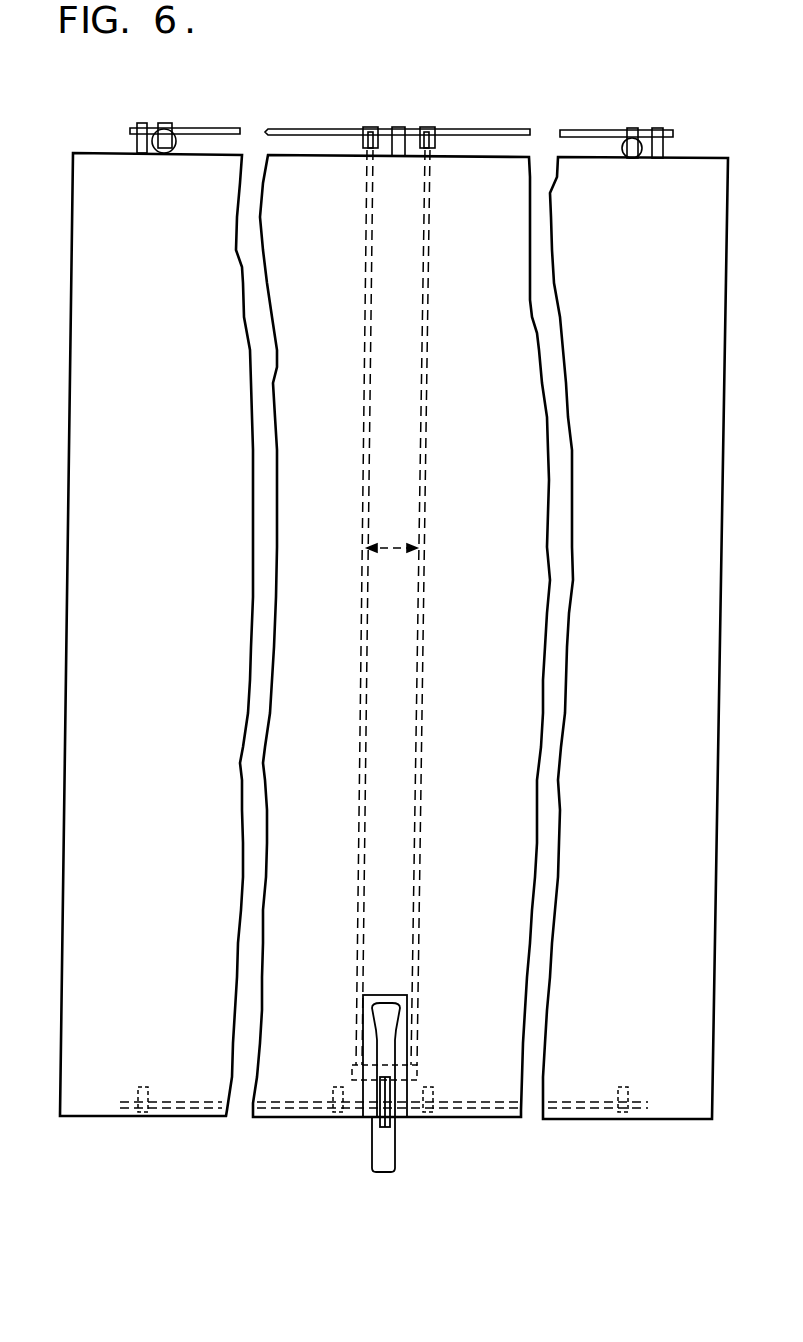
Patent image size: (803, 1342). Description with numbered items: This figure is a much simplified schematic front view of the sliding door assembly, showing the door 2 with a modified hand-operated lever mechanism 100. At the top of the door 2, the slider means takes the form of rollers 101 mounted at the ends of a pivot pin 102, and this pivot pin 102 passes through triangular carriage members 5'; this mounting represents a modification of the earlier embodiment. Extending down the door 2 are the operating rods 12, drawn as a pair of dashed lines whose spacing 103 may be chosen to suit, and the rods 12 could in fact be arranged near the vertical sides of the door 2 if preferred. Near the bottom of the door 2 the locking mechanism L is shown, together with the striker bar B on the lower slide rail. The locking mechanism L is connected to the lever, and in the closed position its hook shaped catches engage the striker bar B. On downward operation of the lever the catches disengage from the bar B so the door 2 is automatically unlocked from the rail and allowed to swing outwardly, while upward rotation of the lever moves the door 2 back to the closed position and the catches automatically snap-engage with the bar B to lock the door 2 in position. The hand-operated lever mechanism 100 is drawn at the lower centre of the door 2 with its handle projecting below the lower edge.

The door 2 is at (82, 771).
The rollers 101 is at (157, 128).
The pivot pin 102 is at (304, 128).
The triangular carriage members 5' is at (399, 114).
The operating rods 12 is at (368, 275).
The spacing 103 is at (392, 542).
The hand-operated lever mechanism 100 is at (371, 1141).
The locking mechanism L is at (142, 1090).
The striker bar B is at (216, 1102).